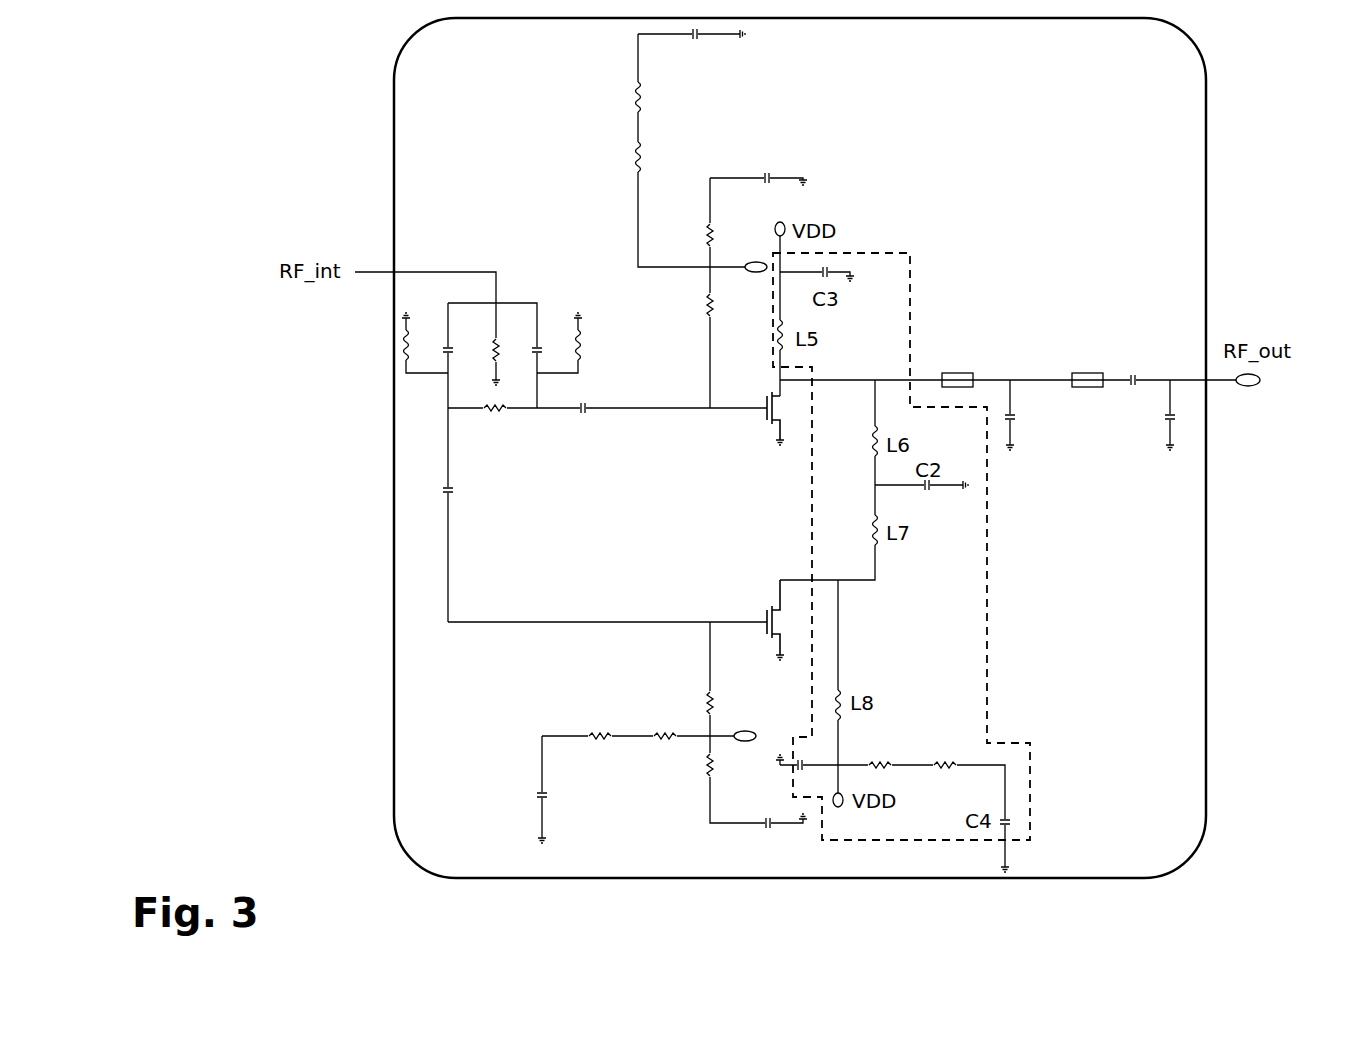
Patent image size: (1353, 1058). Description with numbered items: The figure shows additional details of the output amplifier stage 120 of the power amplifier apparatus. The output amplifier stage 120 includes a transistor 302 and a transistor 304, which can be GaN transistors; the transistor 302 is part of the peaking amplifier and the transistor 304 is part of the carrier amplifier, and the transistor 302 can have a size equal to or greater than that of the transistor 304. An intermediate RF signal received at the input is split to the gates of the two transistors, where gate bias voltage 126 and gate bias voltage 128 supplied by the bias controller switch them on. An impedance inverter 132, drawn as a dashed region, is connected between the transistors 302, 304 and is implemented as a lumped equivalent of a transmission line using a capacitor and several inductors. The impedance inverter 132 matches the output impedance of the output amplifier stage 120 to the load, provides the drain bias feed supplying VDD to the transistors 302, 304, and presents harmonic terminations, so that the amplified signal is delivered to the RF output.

The output amplifier stage 120 is at (394, 712).
The gate bias voltage 126 is at (747, 720).
The gate bias voltage 128 is at (747, 255).
The impedance inverter 132 is at (988, 592).
The transistor 302 is at (757, 425).
The transistor 304 is at (768, 593).